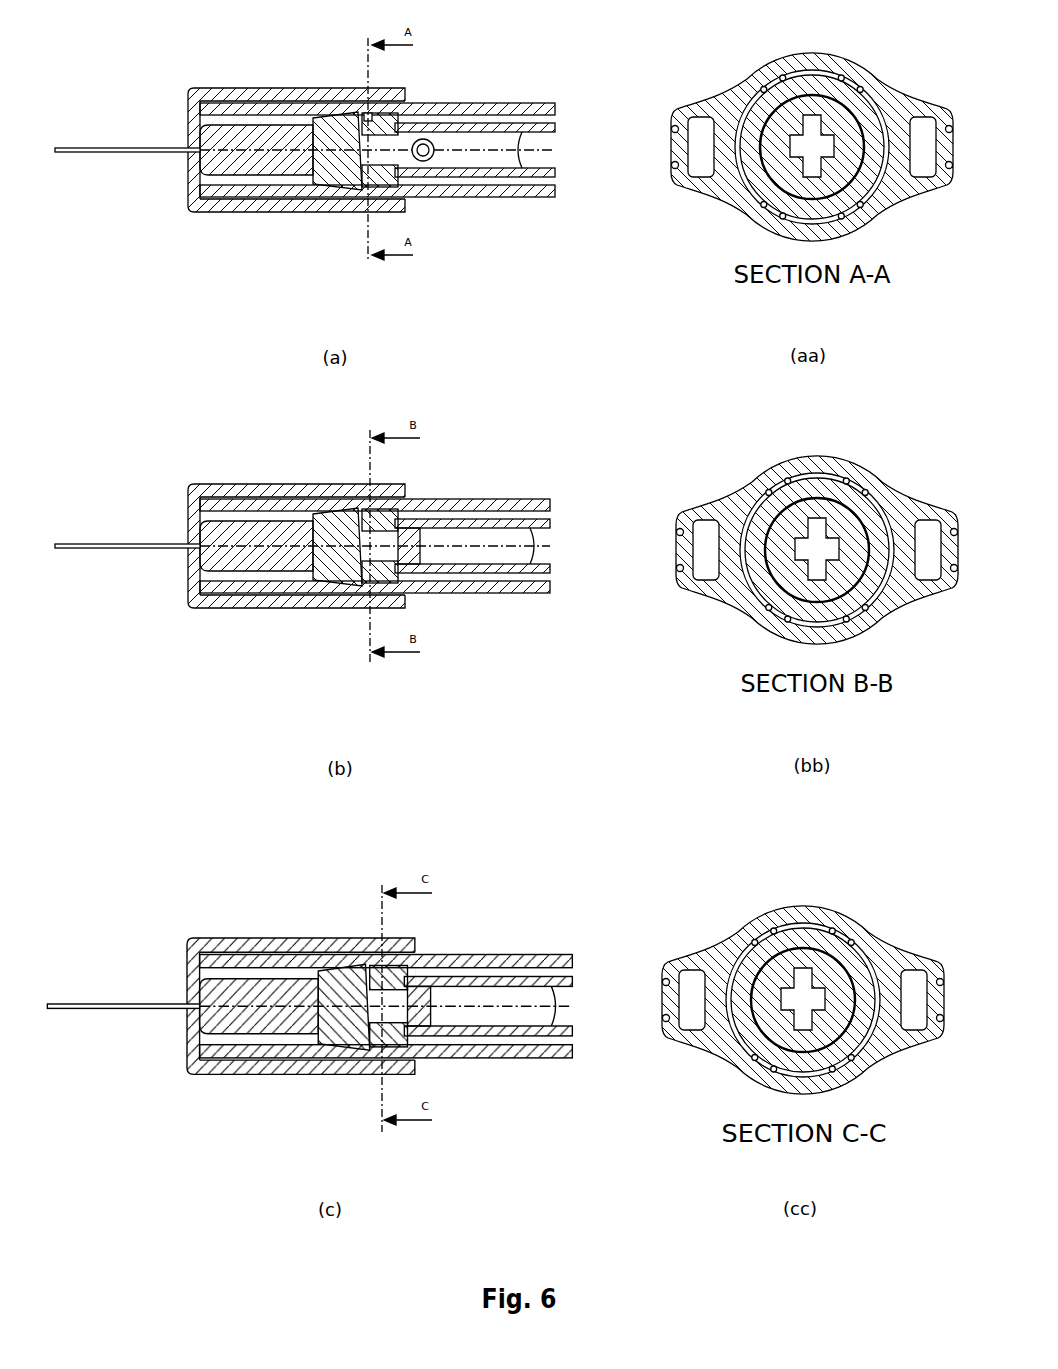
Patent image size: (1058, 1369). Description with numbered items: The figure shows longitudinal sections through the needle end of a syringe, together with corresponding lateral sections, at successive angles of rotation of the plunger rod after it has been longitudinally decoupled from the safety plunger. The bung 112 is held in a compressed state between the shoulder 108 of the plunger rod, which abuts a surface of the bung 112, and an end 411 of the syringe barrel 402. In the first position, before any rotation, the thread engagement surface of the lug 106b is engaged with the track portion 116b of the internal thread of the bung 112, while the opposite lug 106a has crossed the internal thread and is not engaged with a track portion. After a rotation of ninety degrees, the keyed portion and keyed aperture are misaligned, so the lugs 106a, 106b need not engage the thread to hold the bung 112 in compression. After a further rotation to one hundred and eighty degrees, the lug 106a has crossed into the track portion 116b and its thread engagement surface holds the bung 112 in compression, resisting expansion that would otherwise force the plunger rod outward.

In FIG. 6a, the lug 106a is at (360, 178).
In FIG. 6aa, the lug 106a is at (780, 163).
In FIG. 6bb, the lug 106a is at (775, 555).
In FIG. 6cc, the lug 106a is at (800, 969).
In FIG. 6a, the lug 106b is at (318, 118).
In FIG. 6aa, the lug 106b is at (761, 48).
In FIG. 6bb, the lug 106b is at (818, 495).
In FIG. 6cc, the lug 106b is at (715, 1078).
In FIG. 6a, the shoulder 108 is at (398, 120).
In FIG. 6a, the bung 112 is at (318, 196).
In FIG. 6aa, the bung 112 is at (812, 147).
In FIG. 6a, the track portion 116b is at (366, 114).
In FIG. 6aa, the track portion 116b is at (870, 48).
In FIG. 6cc, the track portion 116b is at (861, 899).
In FIG. 6a, the syringe barrel 402 is at (472, 200).
In FIG. 6a, the end 411 is at (300, 190).